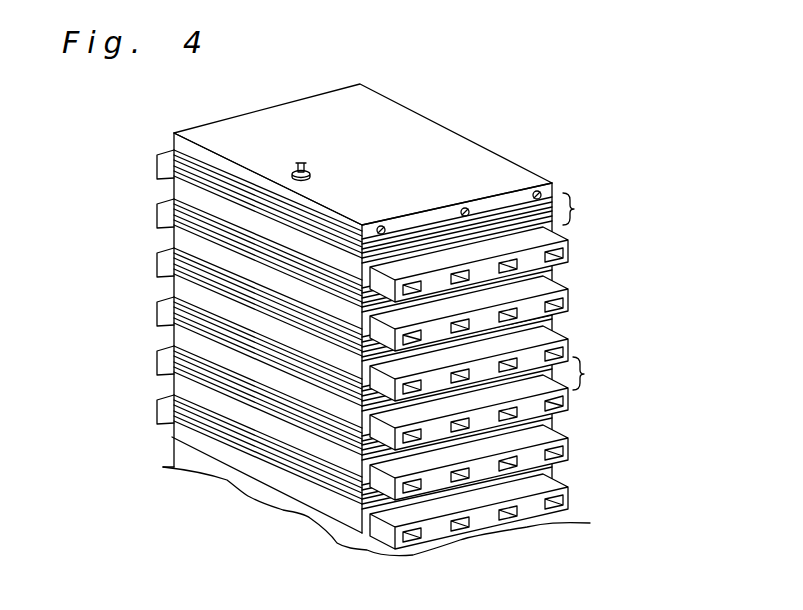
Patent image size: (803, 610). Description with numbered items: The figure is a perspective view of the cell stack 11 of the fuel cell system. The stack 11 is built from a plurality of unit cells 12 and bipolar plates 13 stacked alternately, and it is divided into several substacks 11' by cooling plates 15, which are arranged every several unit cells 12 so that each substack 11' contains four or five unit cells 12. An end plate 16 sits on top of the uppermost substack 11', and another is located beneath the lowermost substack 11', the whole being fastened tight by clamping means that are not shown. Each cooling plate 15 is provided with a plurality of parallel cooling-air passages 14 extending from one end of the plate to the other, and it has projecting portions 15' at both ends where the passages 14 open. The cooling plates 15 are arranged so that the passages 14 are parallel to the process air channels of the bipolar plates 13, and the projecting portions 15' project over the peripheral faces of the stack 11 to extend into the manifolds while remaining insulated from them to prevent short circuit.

The cell stack 11 is at (367, 301).
The substack 11' is at (596, 291).
The unit cell 12 is at (192, 403).
The bipolar plate 13 is at (185, 390).
The cooling-air passage 14 is at (570, 259).
The cooling plate 15 is at (211, 327).
The projecting portion 15' is at (380, 355).
The end plate 16 is at (300, 118).